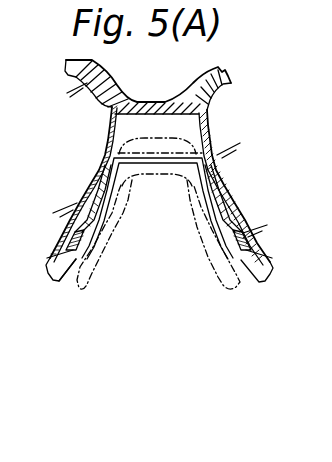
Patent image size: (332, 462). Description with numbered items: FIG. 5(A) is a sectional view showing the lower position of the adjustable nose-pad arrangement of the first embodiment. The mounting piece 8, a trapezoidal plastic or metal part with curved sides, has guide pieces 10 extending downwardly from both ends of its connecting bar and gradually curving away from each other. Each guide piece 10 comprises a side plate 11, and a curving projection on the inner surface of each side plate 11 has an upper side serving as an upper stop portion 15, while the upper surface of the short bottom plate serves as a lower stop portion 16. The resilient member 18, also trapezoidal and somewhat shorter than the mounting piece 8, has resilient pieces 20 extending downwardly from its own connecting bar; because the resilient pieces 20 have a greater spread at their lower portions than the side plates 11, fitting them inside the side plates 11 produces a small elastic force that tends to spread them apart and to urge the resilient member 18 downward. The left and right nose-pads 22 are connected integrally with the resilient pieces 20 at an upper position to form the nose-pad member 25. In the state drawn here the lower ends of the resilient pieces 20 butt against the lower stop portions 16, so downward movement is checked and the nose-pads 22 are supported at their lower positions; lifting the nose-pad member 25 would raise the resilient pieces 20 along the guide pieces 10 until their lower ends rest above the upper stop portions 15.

The mounting piece 8 is at (209, 106).
The guide piece 10 is at (211, 135).
The side plate 11 is at (214, 173).
The upper stop portion 15 is at (97, 209).
The lower stop portion 16 is at (66, 255).
The resilient member 18 is at (113, 149).
The resilient piece 20 is at (114, 176).
The nose-pad 22 is at (82, 284).
The nose-pad member 25 is at (110, 266).